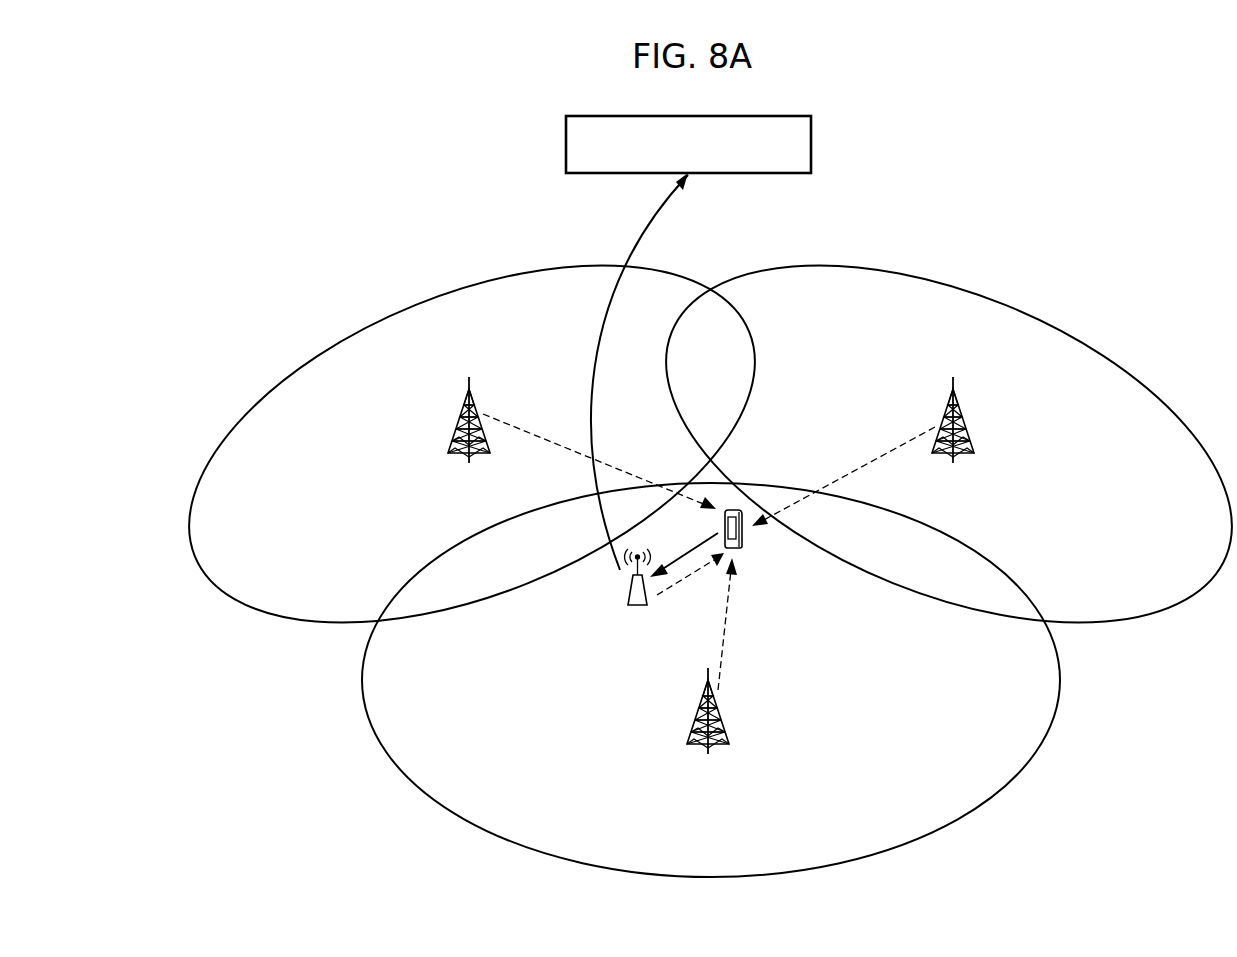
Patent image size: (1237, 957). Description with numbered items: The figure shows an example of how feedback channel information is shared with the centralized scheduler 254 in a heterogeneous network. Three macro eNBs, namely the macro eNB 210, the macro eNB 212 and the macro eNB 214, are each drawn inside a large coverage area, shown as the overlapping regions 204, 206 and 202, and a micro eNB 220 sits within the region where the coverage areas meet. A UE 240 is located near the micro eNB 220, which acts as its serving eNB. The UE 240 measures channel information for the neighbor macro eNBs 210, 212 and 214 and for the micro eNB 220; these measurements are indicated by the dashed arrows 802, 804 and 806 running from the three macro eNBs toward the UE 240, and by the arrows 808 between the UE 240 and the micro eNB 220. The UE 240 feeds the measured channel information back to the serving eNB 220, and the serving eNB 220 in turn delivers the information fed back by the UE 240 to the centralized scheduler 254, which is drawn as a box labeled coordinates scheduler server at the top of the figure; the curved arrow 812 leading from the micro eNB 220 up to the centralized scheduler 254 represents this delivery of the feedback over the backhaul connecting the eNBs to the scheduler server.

The centralized scheduler server 254 is at (811, 143).
The cell coverage area 204 is at (323, 347).
The cell coverage area 206 is at (1068, 328).
The cell coverage area 202 is at (990, 802).
The macro eNB 212 is at (476, 393).
The macro eNB 214 is at (960, 405).
The macro eNB 210 is at (718, 745).
The UE 240 is at (740, 548).
The micro eNB 220 is at (633, 607).
The report to coordinates scheduler server 812 is at (636, 240).
The channel information measurement 804 is at (553, 448).
The channel information measurement 806 is at (877, 460).
The channel information measurement 802 is at (725, 633).
The channel information measurement 808 is at (693, 575).